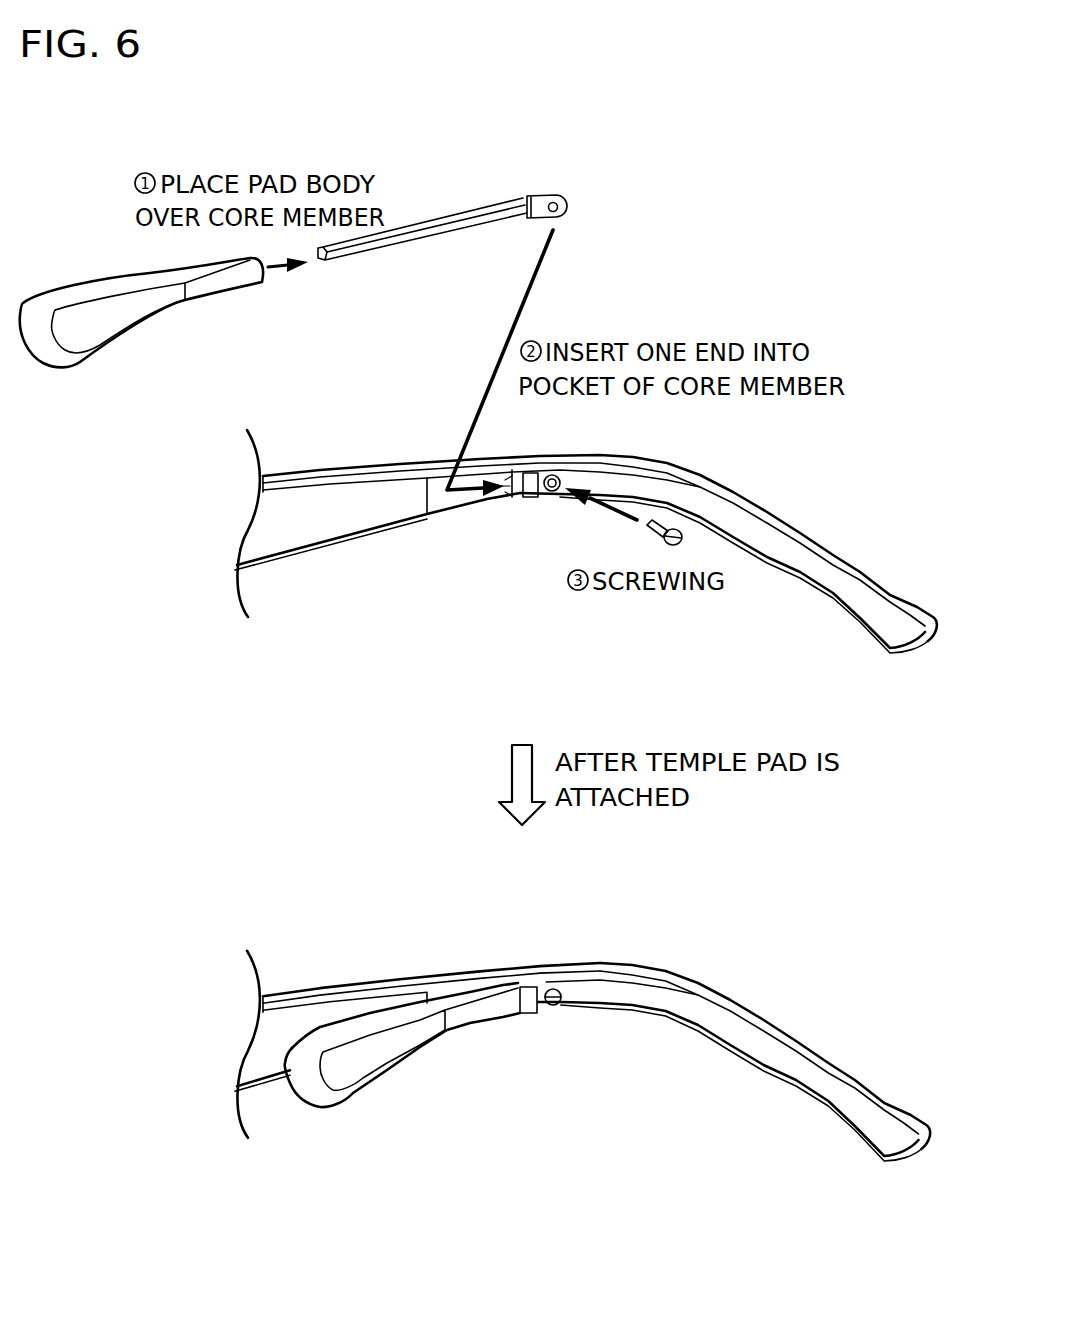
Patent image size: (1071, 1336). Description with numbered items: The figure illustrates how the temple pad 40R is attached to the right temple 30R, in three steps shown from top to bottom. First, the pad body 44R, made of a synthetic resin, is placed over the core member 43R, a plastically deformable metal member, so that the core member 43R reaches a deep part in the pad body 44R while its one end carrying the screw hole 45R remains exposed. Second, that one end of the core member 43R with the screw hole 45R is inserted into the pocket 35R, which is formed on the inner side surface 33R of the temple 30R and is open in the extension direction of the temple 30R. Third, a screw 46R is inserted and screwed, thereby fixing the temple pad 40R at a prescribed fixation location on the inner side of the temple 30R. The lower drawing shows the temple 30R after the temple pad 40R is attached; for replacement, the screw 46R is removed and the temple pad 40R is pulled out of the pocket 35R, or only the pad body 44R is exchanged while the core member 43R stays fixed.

The temple 30R is at (378, 442).
The inner side surface 33R is at (302, 534).
The pocket 35R is at (512, 488).
The temple pad 40R is at (387, 131).
The core member 43R is at (420, 222).
The pad body 44R is at (97, 283).
The screw hole 45R is at (551, 197).
The screw 46R is at (645, 532).